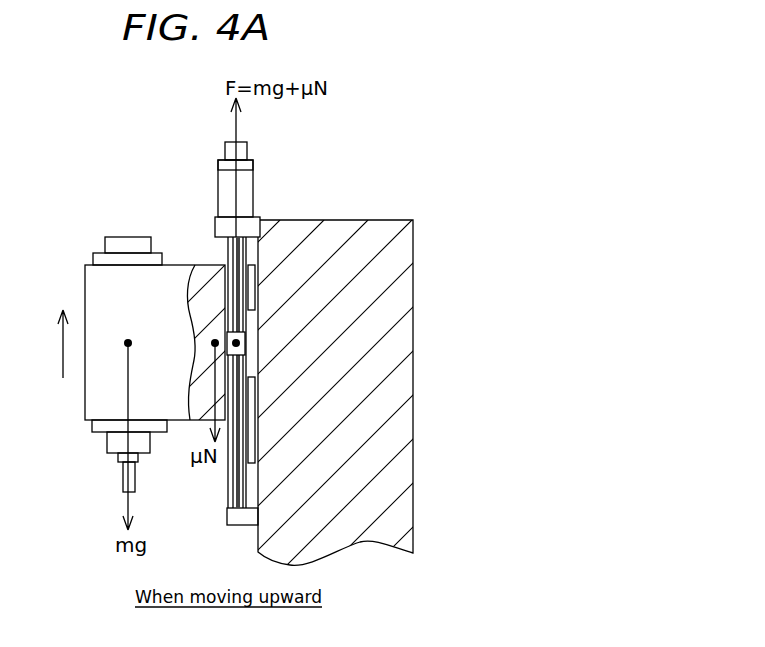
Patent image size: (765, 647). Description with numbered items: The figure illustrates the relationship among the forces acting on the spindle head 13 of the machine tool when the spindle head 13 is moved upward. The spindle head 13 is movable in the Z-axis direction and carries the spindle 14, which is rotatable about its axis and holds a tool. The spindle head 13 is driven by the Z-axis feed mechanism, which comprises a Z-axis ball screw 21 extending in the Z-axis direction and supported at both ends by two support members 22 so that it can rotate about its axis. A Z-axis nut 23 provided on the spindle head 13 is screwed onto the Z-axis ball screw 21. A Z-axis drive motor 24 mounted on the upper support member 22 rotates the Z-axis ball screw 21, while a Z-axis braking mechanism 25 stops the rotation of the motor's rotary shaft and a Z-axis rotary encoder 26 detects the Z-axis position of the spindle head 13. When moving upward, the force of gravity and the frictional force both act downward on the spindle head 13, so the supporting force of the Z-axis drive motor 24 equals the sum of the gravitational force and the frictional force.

The spindle head 13 is at (88, 410).
The spindle 14 is at (108, 440).
The Z-axis ball screw 21 is at (222, 250).
The support member 22 is at (216, 226).
The Z-axis nut 23 is at (227, 338).
The Z-axis drive motor 24 is at (251, 198).
The Z-axis braking mechanism 25 is at (223, 165).
The Z-axis rotary encoder 26 is at (248, 153).